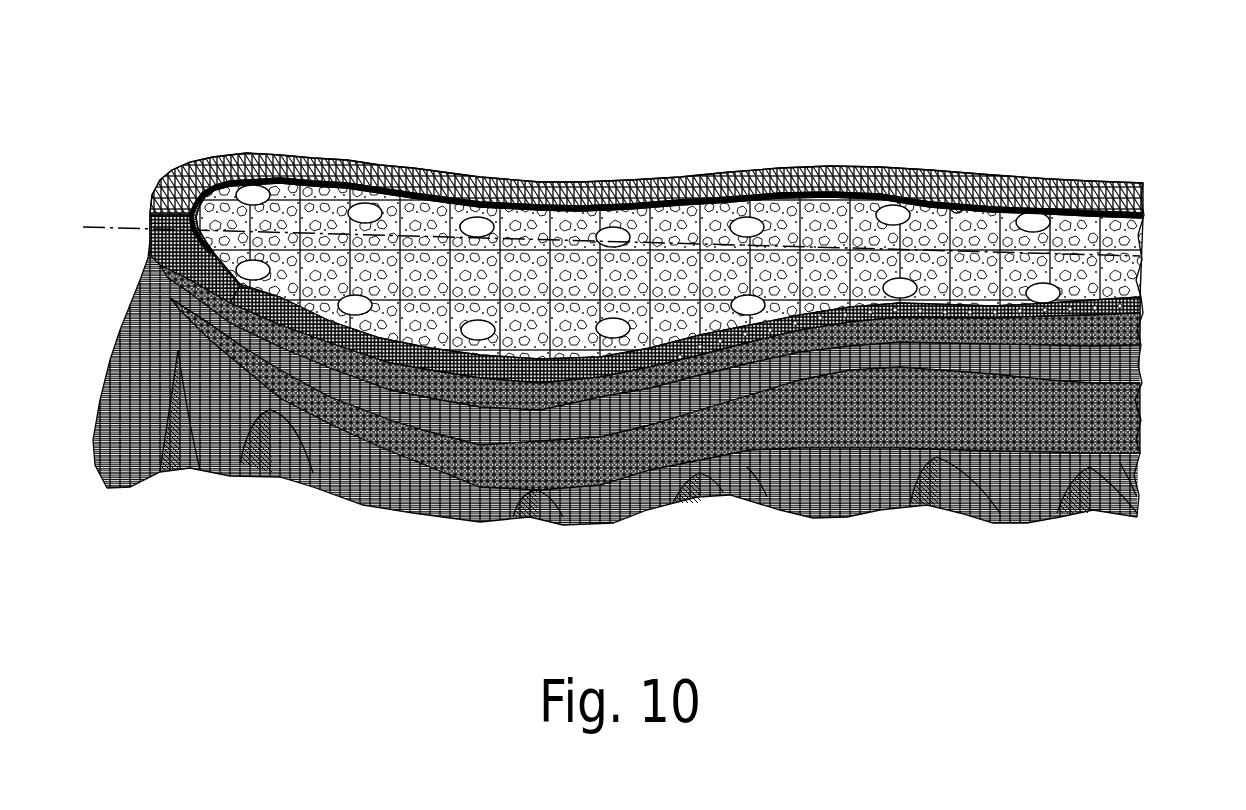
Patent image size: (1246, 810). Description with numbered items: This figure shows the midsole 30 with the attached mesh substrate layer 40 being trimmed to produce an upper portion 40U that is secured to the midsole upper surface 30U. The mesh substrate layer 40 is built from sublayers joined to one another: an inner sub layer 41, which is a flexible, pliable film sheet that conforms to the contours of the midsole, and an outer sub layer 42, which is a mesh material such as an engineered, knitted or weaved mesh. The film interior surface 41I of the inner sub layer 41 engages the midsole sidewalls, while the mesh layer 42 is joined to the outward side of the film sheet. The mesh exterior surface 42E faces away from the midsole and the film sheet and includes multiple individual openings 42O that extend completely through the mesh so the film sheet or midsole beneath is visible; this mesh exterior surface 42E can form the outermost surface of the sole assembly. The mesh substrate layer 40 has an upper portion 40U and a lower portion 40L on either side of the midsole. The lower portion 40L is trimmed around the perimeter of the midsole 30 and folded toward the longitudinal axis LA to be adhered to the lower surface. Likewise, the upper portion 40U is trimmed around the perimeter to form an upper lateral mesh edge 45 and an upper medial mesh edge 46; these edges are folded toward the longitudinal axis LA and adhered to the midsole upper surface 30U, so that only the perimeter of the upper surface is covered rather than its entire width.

The midsole 30 is at (1092, 237).
The upper surface of the midsole 30U is at (668, 270).
The mesh substrate layer 40 is at (150, 280).
The upper portion of the mesh substrate layer 40U is at (578, 183).
The lower portion of the mesh substrate layer 40L is at (742, 465).
The inner sub layer 41 is at (962, 206).
The film interior surface 41I is at (645, 200).
The outer sub layer 42 is at (937, 200).
The mesh exterior surface 42E is at (177, 297).
The openings 42O is at (1140, 404).
The upper lateral mesh edge 45 is at (1080, 195).
The upper medial mesh edge 46 is at (1137, 312).
The longitudinal axis LA is at (100, 230).